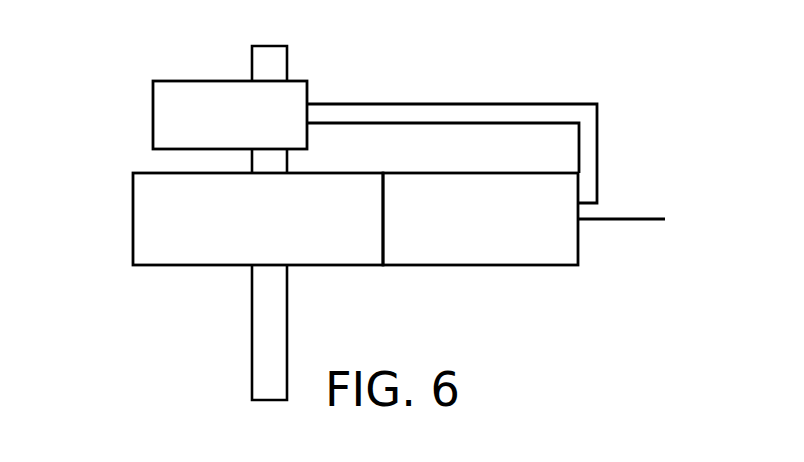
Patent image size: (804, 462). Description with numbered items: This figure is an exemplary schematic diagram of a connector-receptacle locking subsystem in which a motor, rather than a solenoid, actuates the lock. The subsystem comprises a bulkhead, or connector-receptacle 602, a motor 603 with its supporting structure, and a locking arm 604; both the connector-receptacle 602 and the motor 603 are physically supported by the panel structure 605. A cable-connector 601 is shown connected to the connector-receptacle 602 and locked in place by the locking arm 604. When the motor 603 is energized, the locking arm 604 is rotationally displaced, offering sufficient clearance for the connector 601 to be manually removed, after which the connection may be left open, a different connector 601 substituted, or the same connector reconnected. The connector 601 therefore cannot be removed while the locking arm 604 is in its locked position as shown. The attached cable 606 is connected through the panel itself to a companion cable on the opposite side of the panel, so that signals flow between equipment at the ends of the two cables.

The cable-connector 601 is at (579, 262).
The connector-receptacle 602 is at (133, 213).
The motor 603 is at (307, 91).
The locking arm 604 is at (600, 113).
The panel structure 605 is at (252, 320).
The cable 606 is at (623, 216).